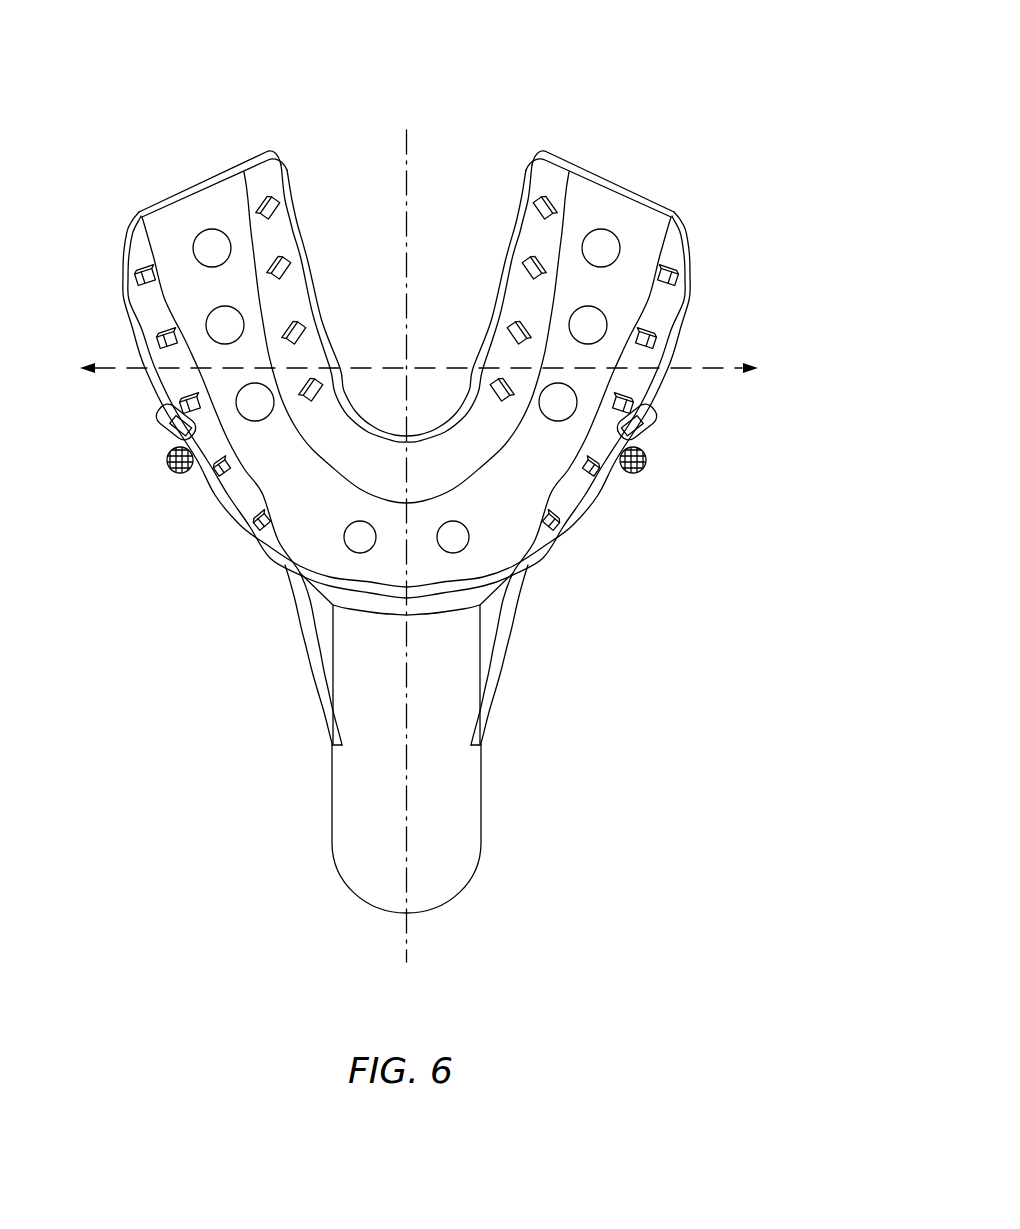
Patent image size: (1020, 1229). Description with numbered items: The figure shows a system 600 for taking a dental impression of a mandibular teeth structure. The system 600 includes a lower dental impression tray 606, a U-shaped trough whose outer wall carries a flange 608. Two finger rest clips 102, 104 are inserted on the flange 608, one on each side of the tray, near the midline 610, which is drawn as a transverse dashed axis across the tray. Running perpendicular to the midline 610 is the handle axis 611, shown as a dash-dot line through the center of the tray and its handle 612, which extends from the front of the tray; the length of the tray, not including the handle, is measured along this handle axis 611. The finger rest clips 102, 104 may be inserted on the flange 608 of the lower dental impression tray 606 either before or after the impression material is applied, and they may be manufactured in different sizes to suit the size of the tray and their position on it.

The system 600 is at (623, 86).
The lower dental impression tray 606 is at (188, 213).
The flange 608 is at (688, 268).
The midline 610 is at (723, 366).
The handle axis 611 is at (406, 940).
The handle 612 is at (331, 807).
The finger rest clip 102 is at (165, 420).
The finger rest clip 104 is at (648, 423).